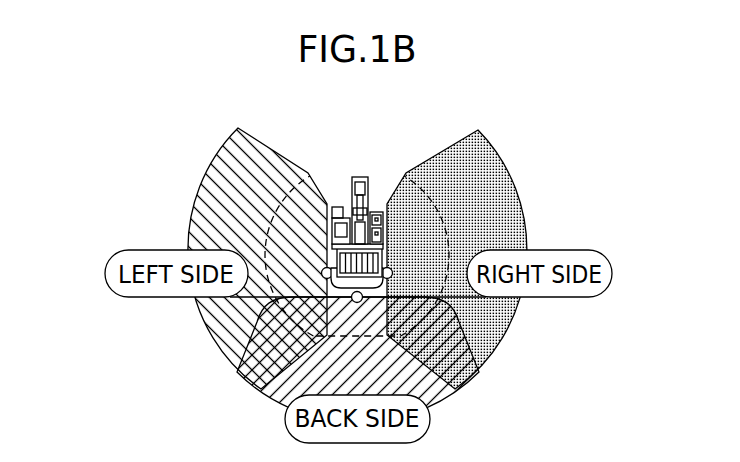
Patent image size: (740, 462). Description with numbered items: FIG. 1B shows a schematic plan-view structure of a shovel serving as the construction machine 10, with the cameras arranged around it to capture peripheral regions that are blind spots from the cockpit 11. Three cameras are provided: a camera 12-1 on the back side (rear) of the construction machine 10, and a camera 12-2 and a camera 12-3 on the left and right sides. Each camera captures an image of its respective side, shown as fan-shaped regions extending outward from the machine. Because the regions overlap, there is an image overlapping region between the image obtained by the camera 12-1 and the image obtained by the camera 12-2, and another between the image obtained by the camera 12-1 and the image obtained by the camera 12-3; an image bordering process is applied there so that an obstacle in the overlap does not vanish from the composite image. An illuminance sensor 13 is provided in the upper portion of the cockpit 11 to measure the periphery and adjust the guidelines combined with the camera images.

The construction machine 10 is at (336, 203).
The cockpit 11 is at (328, 228).
The illuminance sensor 13 is at (342, 226).
The camera 12-1 is at (358, 303).
The camera 12-2 is at (322, 269).
The camera 12-3 is at (392, 270).